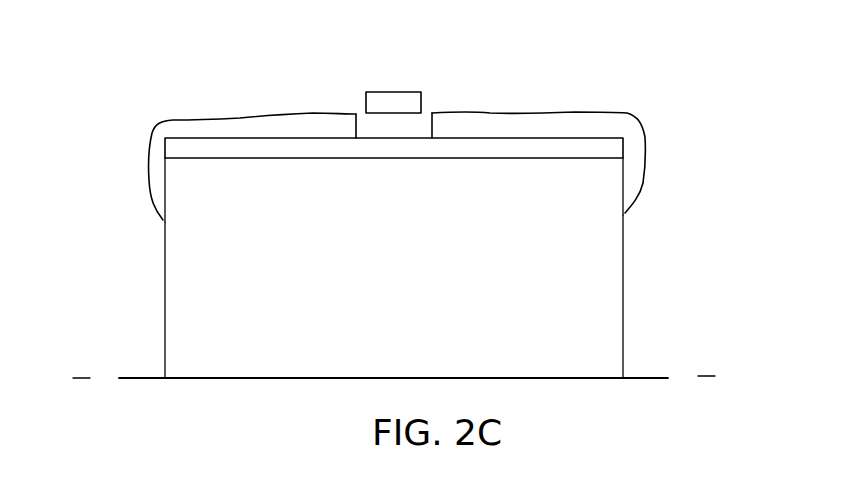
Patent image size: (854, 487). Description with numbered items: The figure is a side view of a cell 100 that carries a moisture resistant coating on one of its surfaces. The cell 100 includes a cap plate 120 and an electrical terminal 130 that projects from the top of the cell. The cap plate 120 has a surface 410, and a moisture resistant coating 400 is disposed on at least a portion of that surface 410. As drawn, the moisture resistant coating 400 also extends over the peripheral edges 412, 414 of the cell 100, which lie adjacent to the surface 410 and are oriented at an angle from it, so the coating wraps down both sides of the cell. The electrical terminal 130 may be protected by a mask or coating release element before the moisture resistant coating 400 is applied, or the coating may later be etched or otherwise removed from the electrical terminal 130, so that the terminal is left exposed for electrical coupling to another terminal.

The cell 100 is at (163, 262).
The cap plate 120 is at (175, 150).
The electrical terminal 130 is at (405, 102).
The moisture resistant coating 400 is at (242, 133).
The surface 410 is at (597, 138).
The peripheral edge 412 is at (623, 228).
The peripheral edge 414 is at (163, 300).